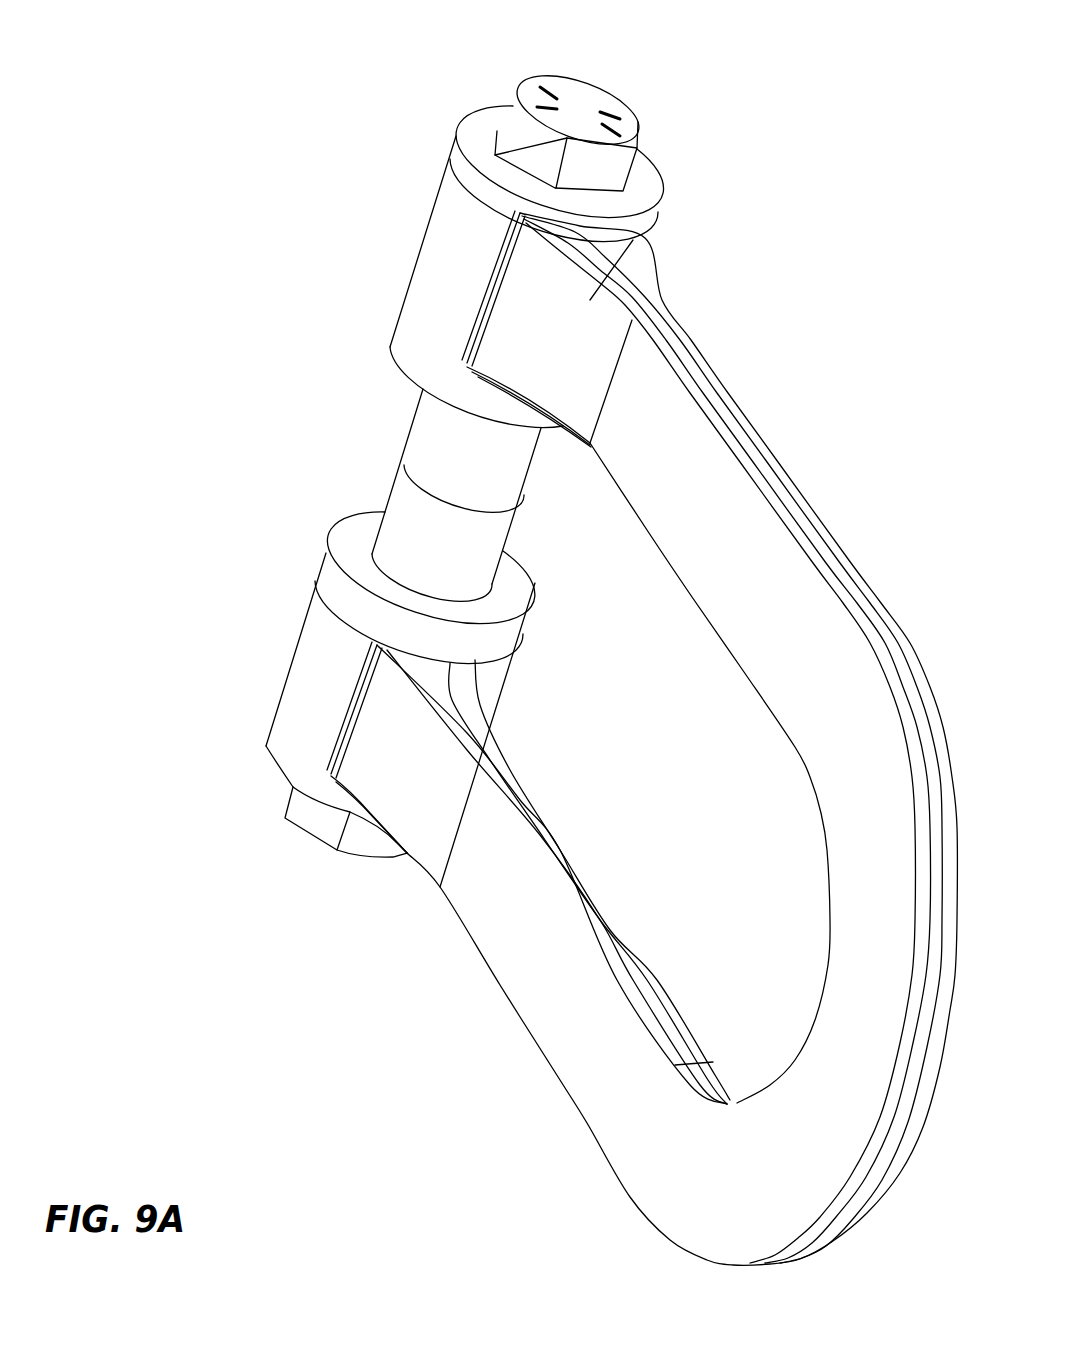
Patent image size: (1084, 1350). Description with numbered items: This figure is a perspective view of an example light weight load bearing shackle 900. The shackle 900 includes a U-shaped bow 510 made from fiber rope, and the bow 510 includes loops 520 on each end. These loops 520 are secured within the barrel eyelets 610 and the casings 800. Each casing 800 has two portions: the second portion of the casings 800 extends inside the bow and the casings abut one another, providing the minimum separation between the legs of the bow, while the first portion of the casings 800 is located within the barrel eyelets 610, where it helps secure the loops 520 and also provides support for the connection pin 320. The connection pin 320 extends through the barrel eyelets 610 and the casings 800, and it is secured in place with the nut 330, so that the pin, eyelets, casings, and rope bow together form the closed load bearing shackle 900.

The light weight load bearing shackle 900 is at (308, 137).
The connection pin 320 is at (578, 93).
The barrel eyelets 610 is at (455, 232).
The casings 800 is at (427, 412).
The bow 510 is at (603, 1102).
The loops 520 is at (623, 268).
The nut 330 is at (310, 807).